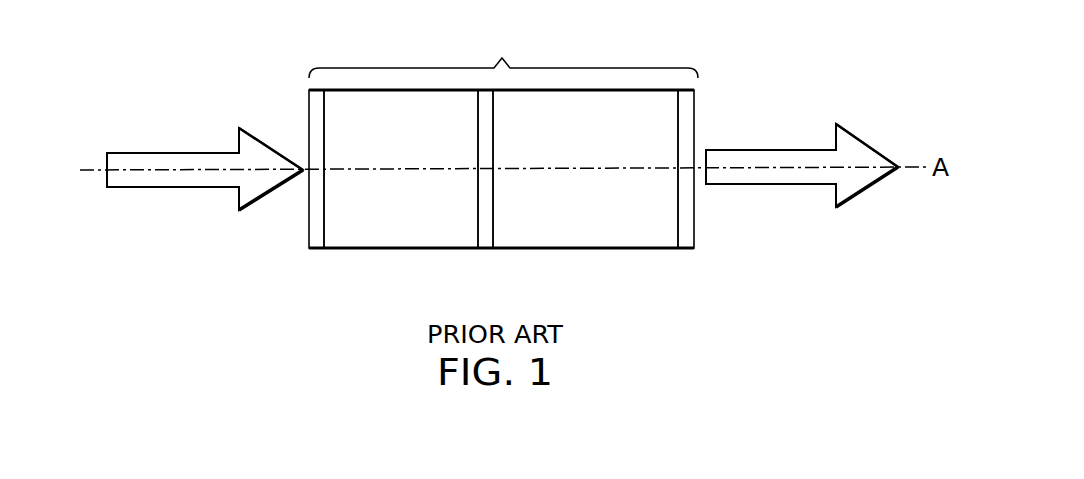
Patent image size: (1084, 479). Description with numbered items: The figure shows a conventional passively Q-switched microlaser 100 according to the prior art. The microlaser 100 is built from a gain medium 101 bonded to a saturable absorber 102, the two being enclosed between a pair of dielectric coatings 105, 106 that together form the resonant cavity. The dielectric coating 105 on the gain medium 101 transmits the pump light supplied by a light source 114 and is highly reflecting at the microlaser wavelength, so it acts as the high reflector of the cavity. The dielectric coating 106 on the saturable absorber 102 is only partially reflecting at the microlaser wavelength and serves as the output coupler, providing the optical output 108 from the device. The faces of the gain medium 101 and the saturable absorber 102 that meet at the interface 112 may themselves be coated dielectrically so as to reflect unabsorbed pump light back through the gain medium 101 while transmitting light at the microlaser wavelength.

The passively Q-switched microlaser 100 is at (503, 138).
The gain medium 101 is at (402, 256).
The saturable absorber 102 is at (592, 256).
The dielectric coating 105 is at (320, 256).
The dielectric coating 106 is at (687, 256).
The optical output 108 is at (771, 150).
The interface 112 is at (488, 256).
The light source 114 is at (188, 152).